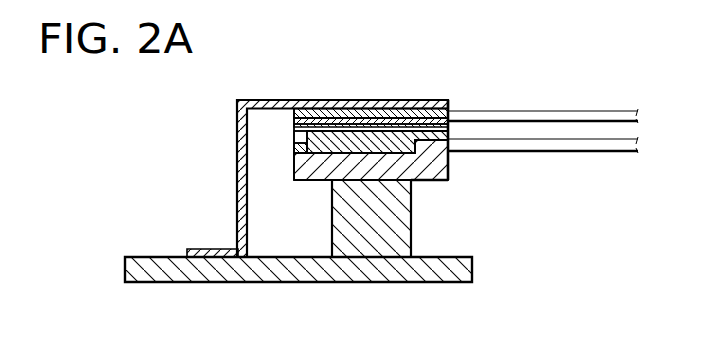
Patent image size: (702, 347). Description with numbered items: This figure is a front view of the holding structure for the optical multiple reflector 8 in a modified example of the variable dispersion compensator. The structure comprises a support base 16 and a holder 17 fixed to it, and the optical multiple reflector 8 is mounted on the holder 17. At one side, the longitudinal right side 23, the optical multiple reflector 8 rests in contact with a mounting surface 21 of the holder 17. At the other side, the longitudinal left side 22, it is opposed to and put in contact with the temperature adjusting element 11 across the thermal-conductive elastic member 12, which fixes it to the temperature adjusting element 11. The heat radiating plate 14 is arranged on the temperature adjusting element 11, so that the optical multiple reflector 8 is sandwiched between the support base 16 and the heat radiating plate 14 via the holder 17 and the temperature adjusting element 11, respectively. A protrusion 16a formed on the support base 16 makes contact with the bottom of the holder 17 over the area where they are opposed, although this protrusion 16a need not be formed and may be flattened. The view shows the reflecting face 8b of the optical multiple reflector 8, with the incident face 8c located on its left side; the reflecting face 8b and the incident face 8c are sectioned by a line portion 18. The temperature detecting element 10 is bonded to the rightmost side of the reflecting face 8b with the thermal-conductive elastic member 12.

The optical multiple reflector 8 is at (297, 156).
The reflecting face 8b is at (372, 133).
The incident face 8c is at (297, 140).
The temperature detecting element 10 is at (431, 109).
The temperature adjusting element 11 is at (335, 117).
The thermal-conductive elastic member 12 is at (300, 102).
The heat radiating plate 14 is at (350, 112).
The support base 16 is at (453, 270).
The protrusion 16a is at (400, 220).
The holder 17 is at (433, 167).
The line portion 18 is at (298, 148).
The mounting surface 21 is at (374, 122).
The longitudinal left side 22 is at (389, 127).
The longitudinal right side 23 is at (325, 155).